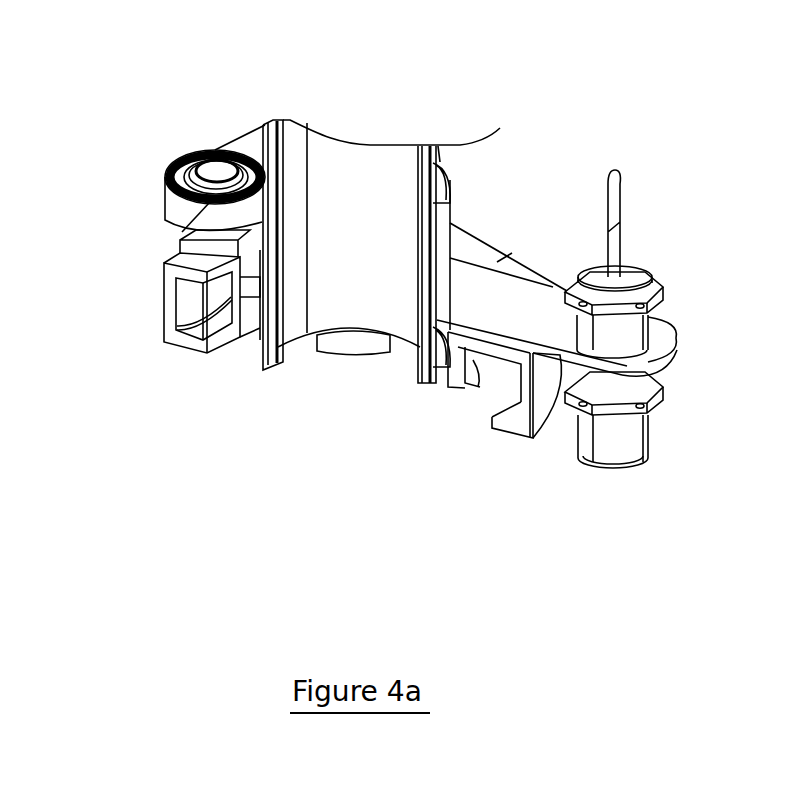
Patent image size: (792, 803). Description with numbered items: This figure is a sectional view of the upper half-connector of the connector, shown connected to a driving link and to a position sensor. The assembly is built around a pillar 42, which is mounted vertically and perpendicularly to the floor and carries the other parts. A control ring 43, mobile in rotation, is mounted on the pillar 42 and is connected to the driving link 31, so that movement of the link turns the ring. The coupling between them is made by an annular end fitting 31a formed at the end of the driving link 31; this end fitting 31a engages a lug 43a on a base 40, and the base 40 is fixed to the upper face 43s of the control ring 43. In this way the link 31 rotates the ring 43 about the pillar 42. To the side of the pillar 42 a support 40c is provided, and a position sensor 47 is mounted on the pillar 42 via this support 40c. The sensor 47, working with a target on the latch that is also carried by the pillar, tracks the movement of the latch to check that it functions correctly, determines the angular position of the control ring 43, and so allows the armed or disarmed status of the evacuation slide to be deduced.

The driving link 31 is at (262, 124).
The annular end fitting 31a is at (165, 186).
The pillar 42 is at (393, 152).
The control ring 43 is at (481, 236).
The upper face 43s is at (509, 266).
The support 40c is at (508, 286).
The position sensor 47 is at (660, 258).
The base 40 is at (186, 248).
The lug 43a is at (227, 298).